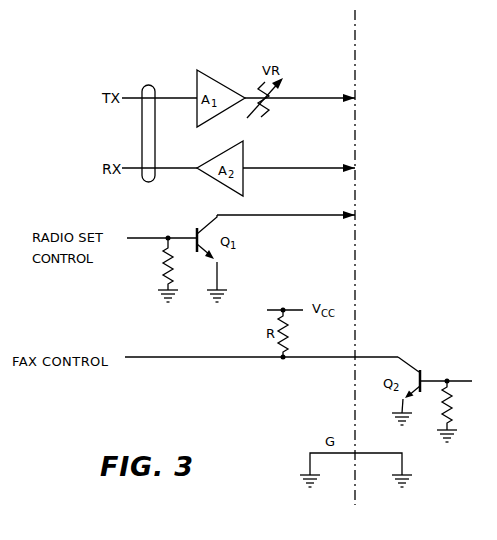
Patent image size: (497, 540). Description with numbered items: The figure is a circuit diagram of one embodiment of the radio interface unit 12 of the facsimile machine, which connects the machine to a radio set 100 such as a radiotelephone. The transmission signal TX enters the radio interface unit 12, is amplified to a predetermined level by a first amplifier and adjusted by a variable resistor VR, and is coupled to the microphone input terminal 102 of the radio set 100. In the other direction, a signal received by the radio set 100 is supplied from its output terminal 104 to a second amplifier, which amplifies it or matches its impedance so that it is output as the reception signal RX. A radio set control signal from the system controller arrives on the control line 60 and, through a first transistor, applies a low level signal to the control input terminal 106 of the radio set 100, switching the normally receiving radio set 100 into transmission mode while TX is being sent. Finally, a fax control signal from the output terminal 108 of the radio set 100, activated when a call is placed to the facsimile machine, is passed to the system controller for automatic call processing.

The radio interface unit 12 is at (180, 38).
The radio set 100 is at (488, 39).
The control line 60 is at (143, 238).
The microphone input terminal 102 is at (357, 99).
The output terminal 104 is at (357, 170).
The control input terminal 106 is at (357, 215).
The output terminal 108 is at (360, 357).